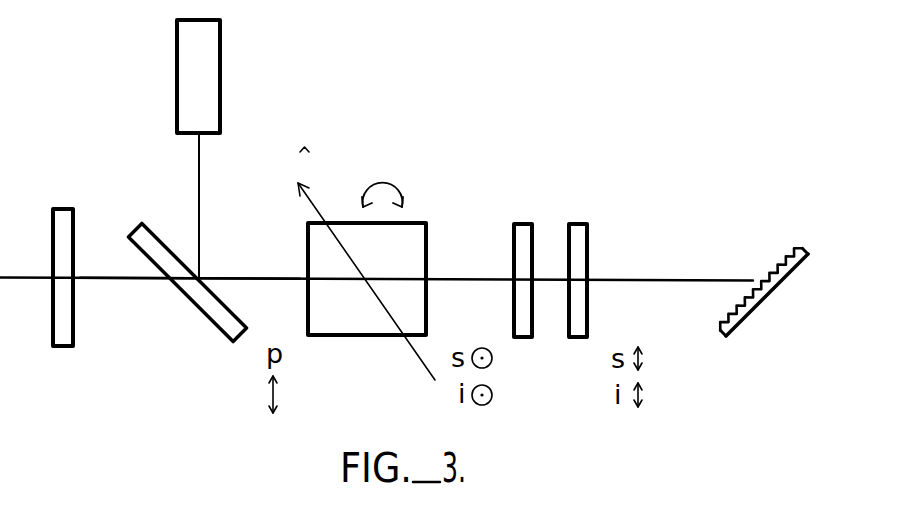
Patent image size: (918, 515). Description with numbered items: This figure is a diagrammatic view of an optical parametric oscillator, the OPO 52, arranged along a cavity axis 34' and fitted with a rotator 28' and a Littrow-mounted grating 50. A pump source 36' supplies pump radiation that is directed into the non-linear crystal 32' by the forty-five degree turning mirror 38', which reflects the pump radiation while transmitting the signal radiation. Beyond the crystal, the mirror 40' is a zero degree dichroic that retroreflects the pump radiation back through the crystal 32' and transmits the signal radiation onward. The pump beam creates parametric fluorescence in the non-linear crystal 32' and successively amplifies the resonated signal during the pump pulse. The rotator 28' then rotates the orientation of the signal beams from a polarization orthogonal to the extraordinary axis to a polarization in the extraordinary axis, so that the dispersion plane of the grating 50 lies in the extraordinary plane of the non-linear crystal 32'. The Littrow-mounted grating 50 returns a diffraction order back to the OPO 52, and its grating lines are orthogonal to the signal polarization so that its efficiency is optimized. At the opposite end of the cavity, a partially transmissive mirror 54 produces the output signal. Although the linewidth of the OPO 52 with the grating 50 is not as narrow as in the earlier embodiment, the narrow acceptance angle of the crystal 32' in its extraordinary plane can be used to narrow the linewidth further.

The rotator 28' is at (609, 239).
The non-linear crystal 32' is at (366, 283).
The cavity axis 34' is at (190, 315).
The pump source 36' is at (247, 149).
The turning mirror 38' is at (187, 314).
The mirror 40' is at (547, 324).
The Littrow-mounted grating 50 is at (750, 313).
The OPO 52 is at (650, 92).
The partially transmissive mirror 54 is at (67, 322).